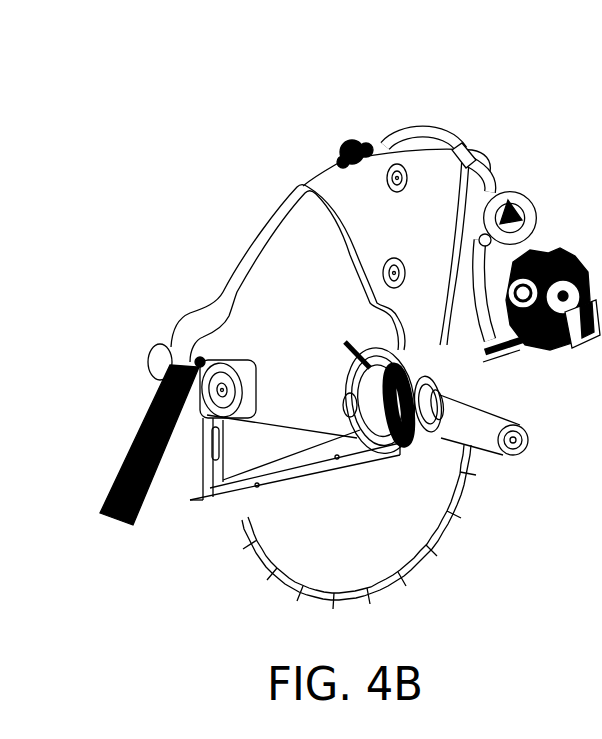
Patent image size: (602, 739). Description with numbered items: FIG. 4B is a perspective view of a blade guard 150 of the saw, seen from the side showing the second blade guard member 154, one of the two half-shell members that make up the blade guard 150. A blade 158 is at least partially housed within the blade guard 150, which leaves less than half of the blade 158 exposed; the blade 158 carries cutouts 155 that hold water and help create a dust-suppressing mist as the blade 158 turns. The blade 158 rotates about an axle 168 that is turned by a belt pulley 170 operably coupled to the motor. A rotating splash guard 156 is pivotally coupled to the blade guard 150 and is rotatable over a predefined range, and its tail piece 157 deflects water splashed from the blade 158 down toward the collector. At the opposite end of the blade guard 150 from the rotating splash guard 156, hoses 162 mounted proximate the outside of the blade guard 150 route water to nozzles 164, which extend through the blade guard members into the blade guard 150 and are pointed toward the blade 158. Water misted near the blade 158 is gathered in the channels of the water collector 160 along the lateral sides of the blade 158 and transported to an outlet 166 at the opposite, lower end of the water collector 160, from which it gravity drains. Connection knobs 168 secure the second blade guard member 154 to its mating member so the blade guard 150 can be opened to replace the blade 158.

The blade guard 150 is at (492, 108).
The second blade guard member 154 is at (358, 197).
The cutouts 155 is at (363, 580).
The rotating splash guard 156 is at (273, 295).
The tail piece 157 is at (135, 447).
The blade 158 is at (333, 557).
The water collector 160 is at (280, 478).
The hoses 162 is at (437, 137).
The nozzles 164 is at (500, 365).
The outlet 166 is at (200, 493).
The connection knobs 168 is at (343, 143).
The belt pulley 170 is at (403, 440).